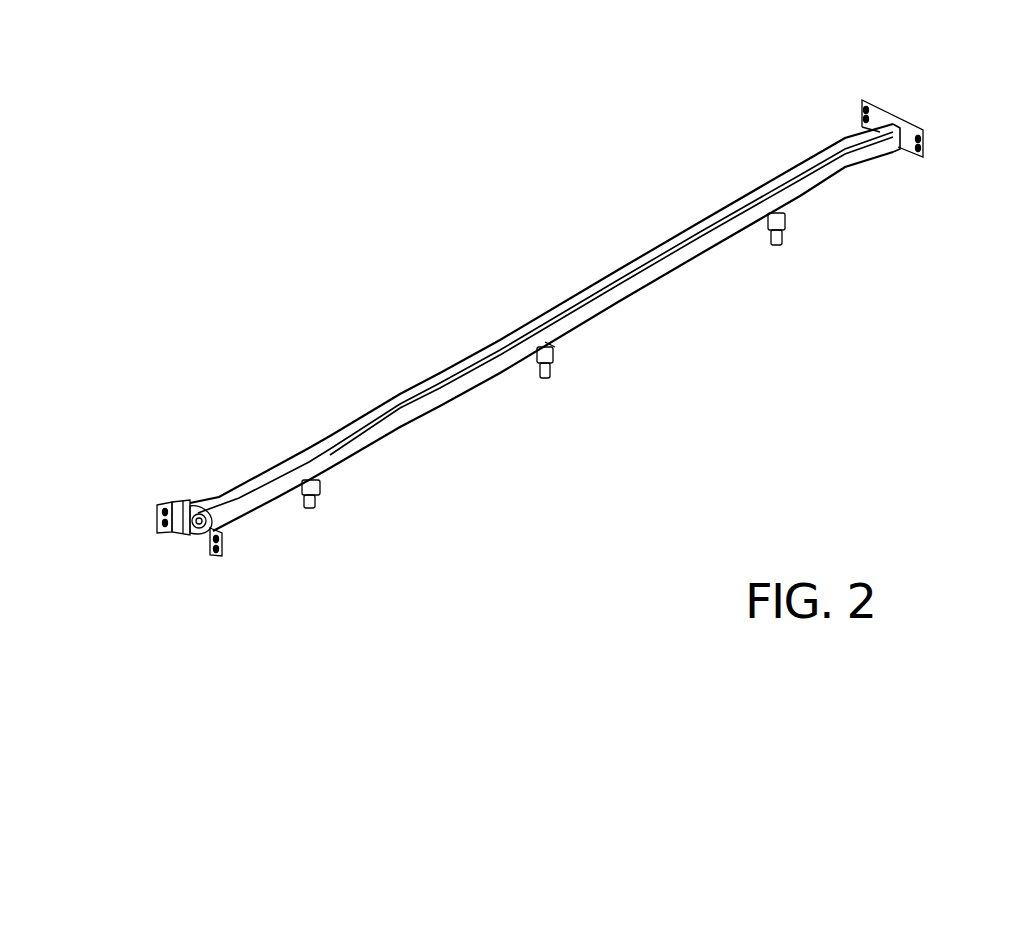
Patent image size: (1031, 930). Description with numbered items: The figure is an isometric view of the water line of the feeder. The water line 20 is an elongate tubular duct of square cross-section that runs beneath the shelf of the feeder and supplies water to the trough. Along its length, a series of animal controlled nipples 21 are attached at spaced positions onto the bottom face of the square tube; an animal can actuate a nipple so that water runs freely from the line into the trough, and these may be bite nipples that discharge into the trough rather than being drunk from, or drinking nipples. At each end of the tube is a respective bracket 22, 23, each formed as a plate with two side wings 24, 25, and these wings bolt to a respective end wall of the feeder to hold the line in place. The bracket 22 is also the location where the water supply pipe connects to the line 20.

The water line 20 is at (457, 358).
The nipples 21 is at (550, 350).
The bracket 22 is at (188, 502).
The bracket 23 is at (843, 107).
The side wing 24 is at (877, 100).
The side wing 25 is at (915, 125).